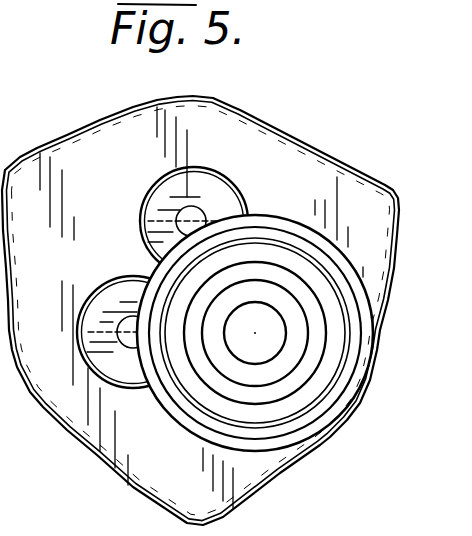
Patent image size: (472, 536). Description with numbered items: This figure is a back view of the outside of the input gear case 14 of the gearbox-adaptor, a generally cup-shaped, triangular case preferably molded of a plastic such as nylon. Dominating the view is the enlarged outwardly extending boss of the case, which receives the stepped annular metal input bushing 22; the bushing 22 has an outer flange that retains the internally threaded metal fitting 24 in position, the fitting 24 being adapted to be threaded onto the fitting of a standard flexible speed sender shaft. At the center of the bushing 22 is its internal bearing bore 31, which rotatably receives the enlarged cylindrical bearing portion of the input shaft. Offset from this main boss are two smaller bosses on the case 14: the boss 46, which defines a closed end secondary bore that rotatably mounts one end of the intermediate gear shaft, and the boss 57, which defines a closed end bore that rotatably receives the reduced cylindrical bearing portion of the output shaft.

The input gear case 14 is at (93, 128).
The input bushing 22 is at (284, 364).
The internally threaded metal fitting 24 is at (284, 444).
The internal bearing bore 31 is at (238, 345).
The boss 46 is at (187, 186).
The boss 57 is at (108, 300).